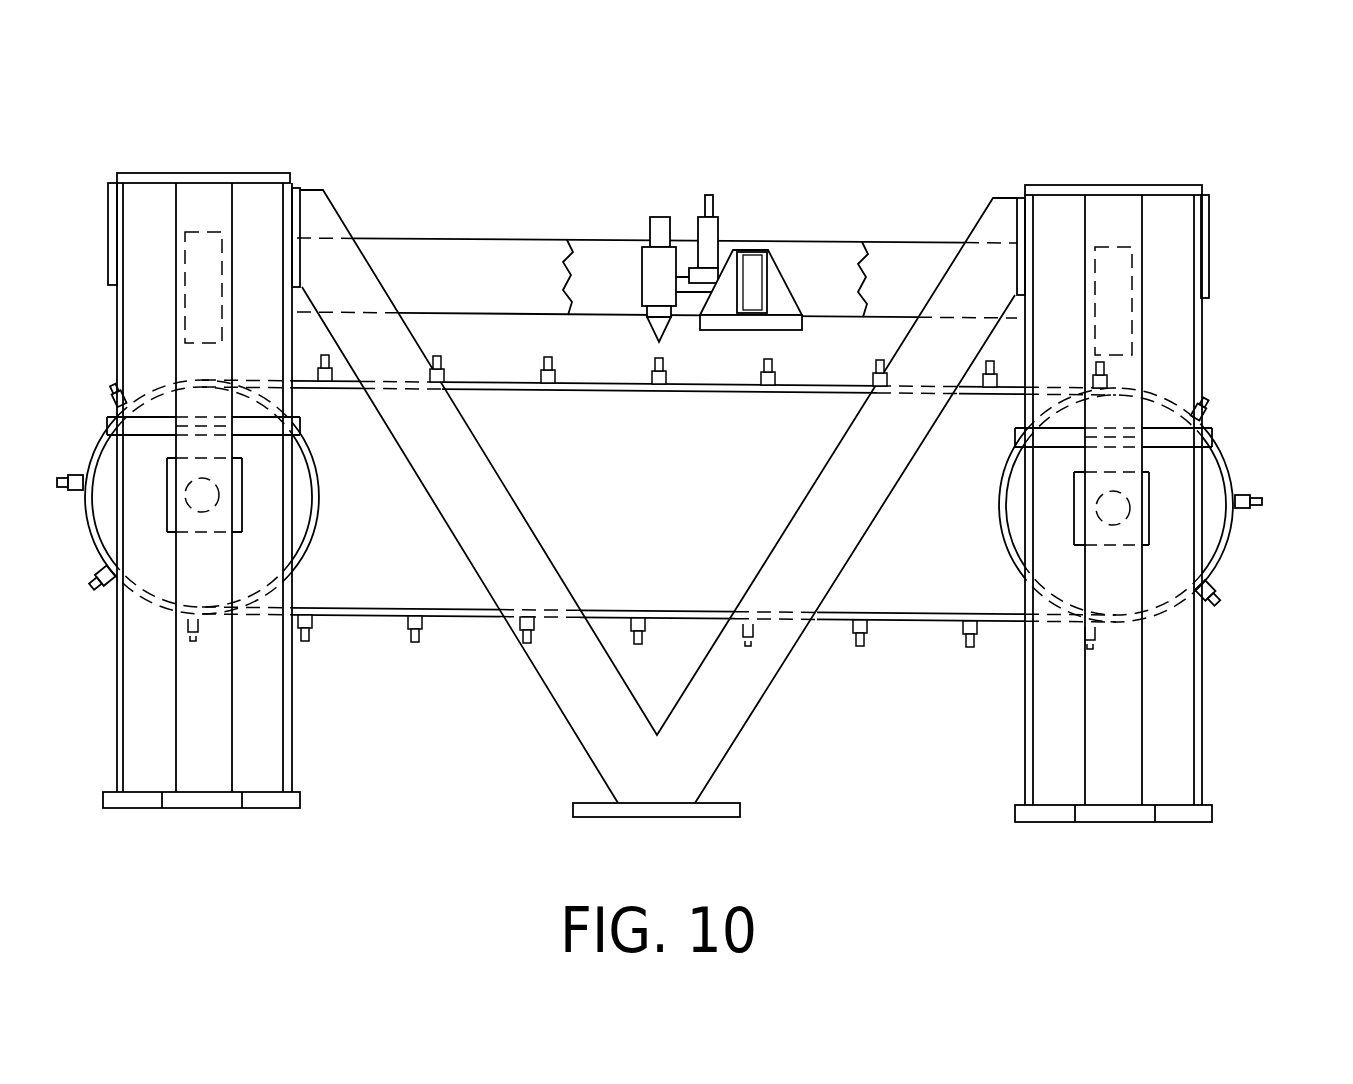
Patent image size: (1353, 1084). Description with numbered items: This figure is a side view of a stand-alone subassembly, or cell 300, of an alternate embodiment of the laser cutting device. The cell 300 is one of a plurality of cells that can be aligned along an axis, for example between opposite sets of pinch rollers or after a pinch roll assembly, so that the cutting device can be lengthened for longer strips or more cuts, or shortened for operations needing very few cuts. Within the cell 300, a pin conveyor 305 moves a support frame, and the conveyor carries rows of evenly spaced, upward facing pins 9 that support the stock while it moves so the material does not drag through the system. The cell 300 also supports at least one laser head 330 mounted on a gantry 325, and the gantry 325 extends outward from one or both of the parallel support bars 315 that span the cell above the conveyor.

The cell 300 is at (1183, 122).
The parallel support bar 315 is at (478, 247).
The laser head 330 is at (660, 222).
The gantry 325 is at (750, 247).
The pin conveyor 305 is at (1222, 455).
The pin 9 is at (1262, 500).